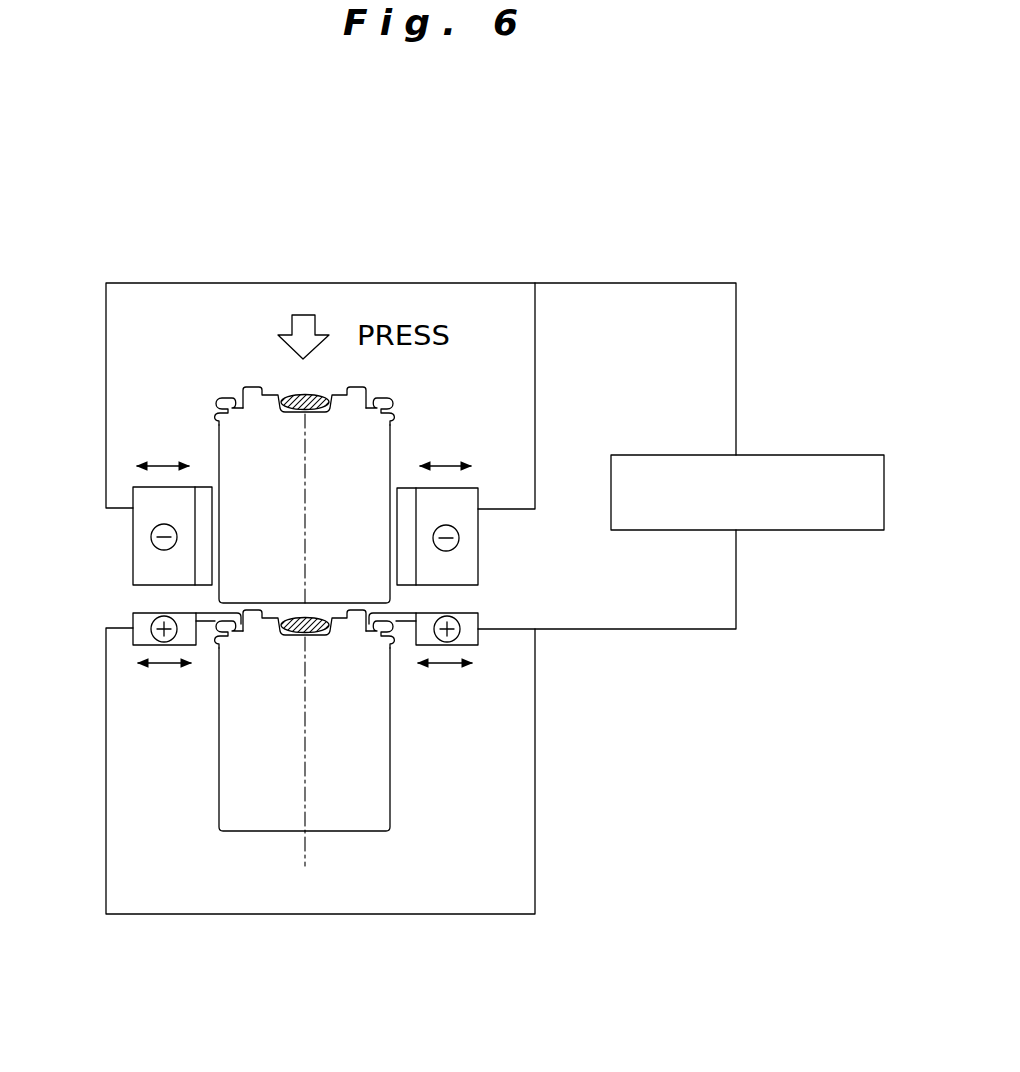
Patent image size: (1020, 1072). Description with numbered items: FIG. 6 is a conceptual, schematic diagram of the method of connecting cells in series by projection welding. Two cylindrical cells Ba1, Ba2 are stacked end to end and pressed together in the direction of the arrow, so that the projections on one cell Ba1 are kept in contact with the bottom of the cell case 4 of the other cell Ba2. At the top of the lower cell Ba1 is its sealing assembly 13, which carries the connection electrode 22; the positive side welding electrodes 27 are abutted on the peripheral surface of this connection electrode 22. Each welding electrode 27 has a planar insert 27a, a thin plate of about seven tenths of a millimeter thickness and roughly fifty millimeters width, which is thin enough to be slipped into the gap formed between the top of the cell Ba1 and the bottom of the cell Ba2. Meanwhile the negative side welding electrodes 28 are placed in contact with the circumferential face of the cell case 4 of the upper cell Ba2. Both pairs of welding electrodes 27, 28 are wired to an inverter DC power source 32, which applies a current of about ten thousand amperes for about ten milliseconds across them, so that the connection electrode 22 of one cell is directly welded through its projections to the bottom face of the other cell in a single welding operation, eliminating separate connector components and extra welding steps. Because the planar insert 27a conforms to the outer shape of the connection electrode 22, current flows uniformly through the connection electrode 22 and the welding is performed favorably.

The cell case 4 is at (316, 617).
The sealing assembly 13 is at (279, 641).
The connection electrode 22 is at (360, 622).
The positive side welding electrode 27 is at (143, 623).
The planar insert 27a is at (212, 628).
The negative side welding electrode 28 is at (143, 527).
The inverter DC power source 32 is at (762, 530).
The cell Ba1 is at (339, 738).
The cell Ba2 is at (390, 432).